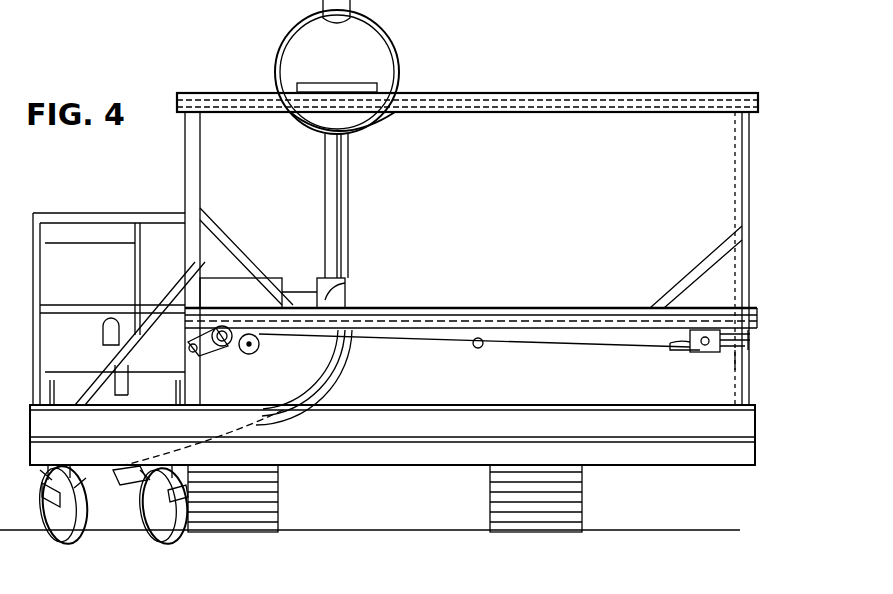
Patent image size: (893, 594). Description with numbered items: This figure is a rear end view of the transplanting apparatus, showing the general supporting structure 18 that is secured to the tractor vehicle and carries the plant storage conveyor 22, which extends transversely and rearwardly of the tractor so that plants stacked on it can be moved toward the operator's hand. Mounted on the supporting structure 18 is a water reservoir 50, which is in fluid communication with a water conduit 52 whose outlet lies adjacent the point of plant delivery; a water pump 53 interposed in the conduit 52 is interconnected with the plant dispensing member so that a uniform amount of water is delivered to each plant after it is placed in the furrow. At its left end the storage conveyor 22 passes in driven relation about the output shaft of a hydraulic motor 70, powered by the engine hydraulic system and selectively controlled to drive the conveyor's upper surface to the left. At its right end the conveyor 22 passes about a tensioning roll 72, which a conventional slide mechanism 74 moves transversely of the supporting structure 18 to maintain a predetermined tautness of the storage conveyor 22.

The general supporting structure 18 is at (556, 93).
The storage conveyor 22 is at (497, 322).
The water reservoir 50 is at (383, 55).
The water conduit 52 is at (338, 352).
The water pump 53 is at (316, 280).
The hydraulic motor 70 is at (236, 356).
The tensioning roll 72 is at (678, 352).
The slide mechanism 74 is at (726, 352).